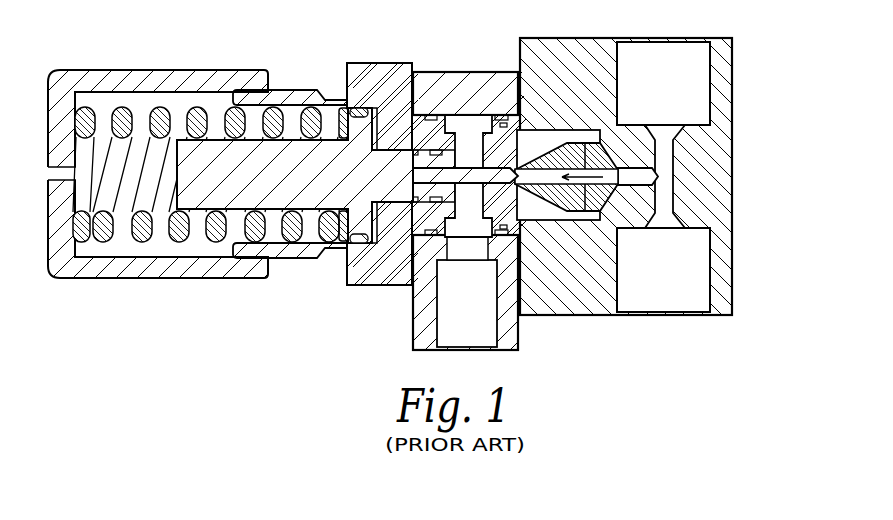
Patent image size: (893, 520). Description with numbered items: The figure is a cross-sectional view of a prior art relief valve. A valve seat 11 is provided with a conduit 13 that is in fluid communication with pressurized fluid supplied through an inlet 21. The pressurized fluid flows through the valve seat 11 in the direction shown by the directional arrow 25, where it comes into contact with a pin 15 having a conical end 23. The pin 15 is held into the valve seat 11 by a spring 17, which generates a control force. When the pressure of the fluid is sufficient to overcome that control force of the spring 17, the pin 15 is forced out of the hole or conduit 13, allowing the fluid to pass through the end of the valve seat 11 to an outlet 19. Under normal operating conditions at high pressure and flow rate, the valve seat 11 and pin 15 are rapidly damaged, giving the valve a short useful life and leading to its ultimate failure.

The valve seat 11 is at (612, 193).
The conduit 13 is at (623, 177).
The pin 15 is at (438, 177).
The spring 17 is at (225, 115).
The outlet 19 is at (463, 228).
The inlet 21 is at (657, 177).
The conical end 23 is at (483, 157).
The directional arrow 25 is at (587, 178).